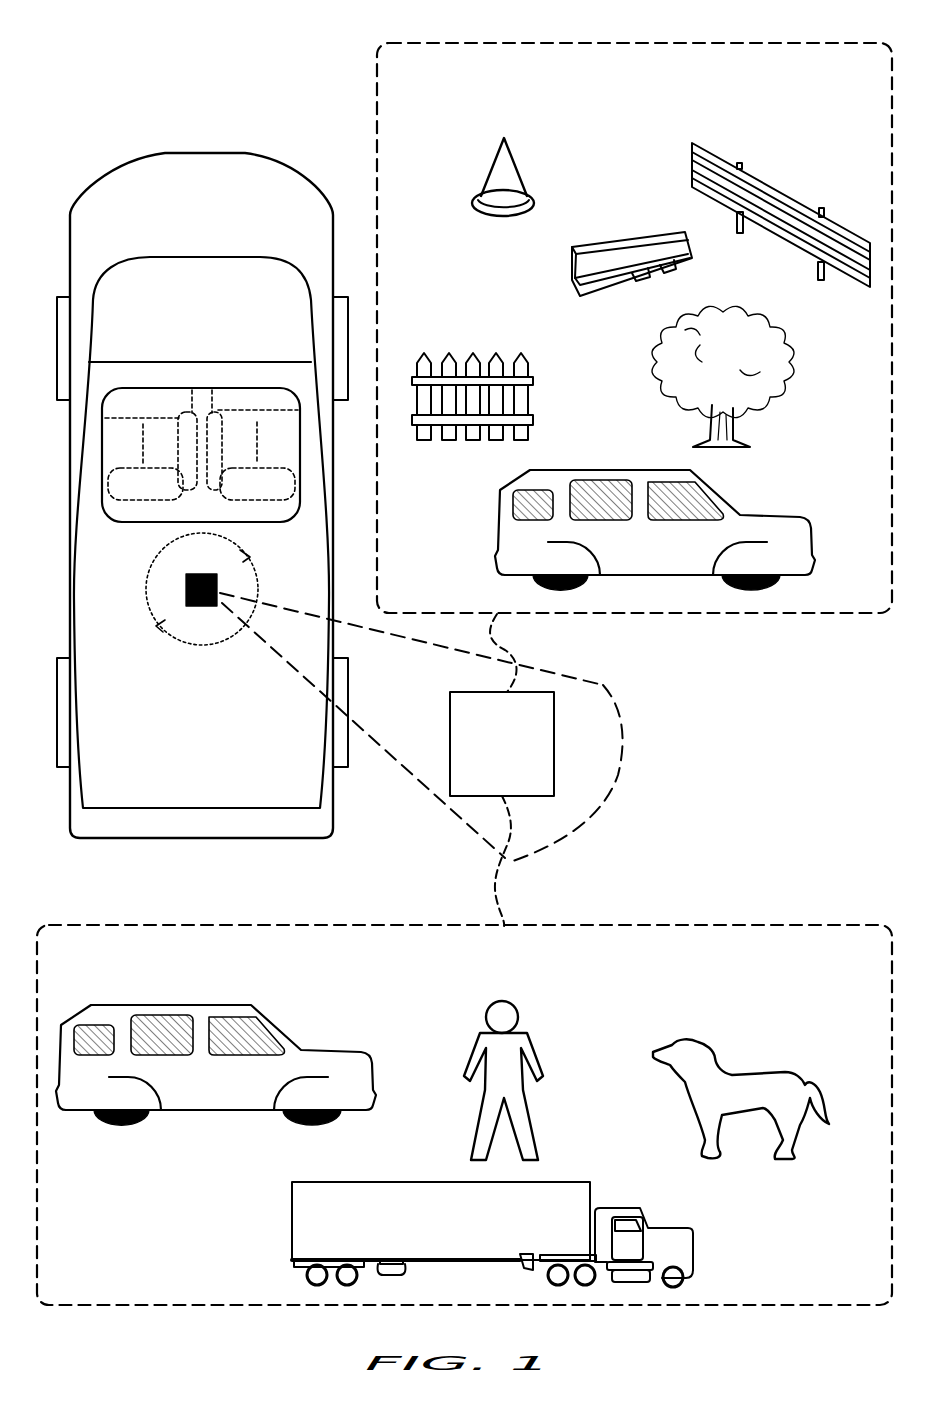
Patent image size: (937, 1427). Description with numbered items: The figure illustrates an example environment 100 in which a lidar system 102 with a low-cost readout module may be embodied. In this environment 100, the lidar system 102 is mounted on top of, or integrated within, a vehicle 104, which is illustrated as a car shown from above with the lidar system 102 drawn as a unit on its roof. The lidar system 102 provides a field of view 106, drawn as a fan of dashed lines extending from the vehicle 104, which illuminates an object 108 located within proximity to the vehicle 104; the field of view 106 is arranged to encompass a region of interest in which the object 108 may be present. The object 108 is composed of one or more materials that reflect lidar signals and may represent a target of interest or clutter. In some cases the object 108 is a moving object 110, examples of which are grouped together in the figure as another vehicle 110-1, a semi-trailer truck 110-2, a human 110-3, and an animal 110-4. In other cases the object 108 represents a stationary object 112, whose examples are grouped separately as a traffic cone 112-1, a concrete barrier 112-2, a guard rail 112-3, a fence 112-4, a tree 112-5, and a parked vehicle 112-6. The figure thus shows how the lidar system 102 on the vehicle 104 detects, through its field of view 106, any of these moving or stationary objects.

The environment 100 is at (115, 38).
The lidar system 102 is at (202, 606).
The vehicle 104 is at (212, 153).
The field of view 106 is at (604, 686).
The object 108 is at (554, 745).
The moving object 110 is at (477, 984).
The vehicle 110-1 is at (313, 1048).
The semi-trailer truck 110-2 is at (290, 1220).
The human 110-3 is at (532, 1040).
The animal 110-4 is at (743, 1070).
The stationary object 112 is at (652, 103).
The traffic cone 112-1 is at (490, 168).
The concrete barrier 112-2 is at (572, 263).
The guard rail 112-3 is at (692, 153).
The fence 112-4 is at (532, 370).
The tree 112-5 is at (757, 335).
The parked vehicle 112-6 is at (753, 513).